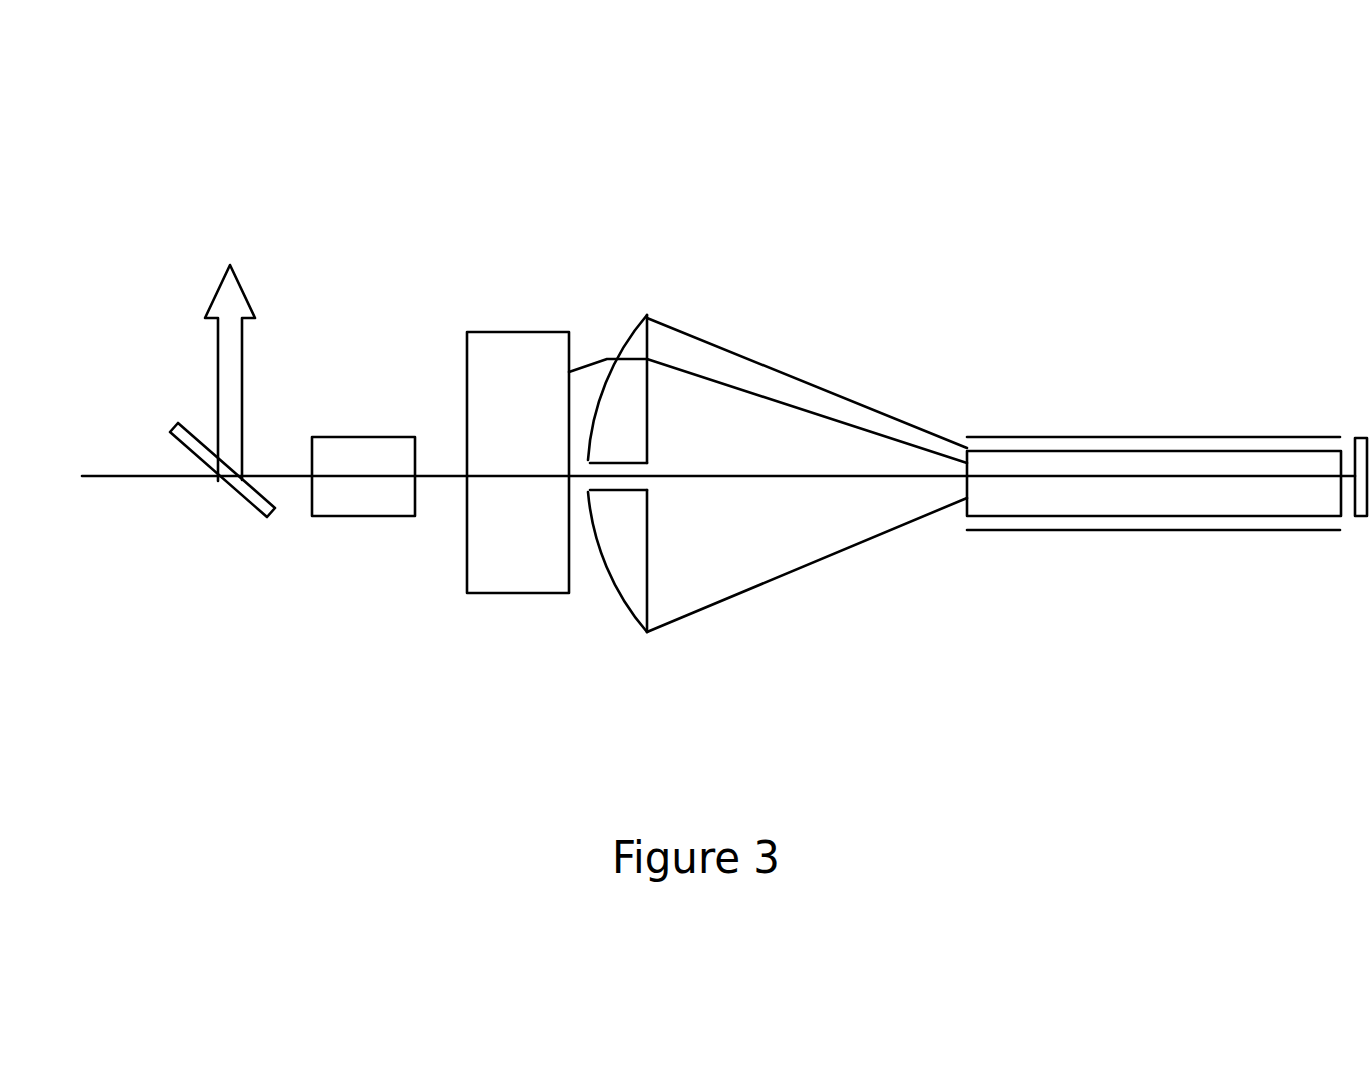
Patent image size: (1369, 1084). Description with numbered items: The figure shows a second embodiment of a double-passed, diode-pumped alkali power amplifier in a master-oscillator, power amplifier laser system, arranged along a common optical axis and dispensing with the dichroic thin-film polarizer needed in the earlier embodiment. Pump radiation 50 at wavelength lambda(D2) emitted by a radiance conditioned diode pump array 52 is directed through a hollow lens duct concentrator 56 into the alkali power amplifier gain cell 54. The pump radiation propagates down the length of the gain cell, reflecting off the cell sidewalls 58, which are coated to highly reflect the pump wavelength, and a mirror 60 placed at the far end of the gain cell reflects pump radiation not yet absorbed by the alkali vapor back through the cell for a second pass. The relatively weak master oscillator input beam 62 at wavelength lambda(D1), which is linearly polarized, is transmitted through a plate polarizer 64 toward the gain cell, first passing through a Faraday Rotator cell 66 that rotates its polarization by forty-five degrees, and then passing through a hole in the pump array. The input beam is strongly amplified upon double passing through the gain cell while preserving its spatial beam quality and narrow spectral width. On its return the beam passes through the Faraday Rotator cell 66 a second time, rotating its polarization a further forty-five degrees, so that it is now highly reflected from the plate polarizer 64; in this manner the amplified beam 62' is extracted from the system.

The radiation 50 is at (770, 397).
The diode pump array 52 is at (525, 332).
The alkali power amplifier gain cell 54 is at (1128, 451).
The hollow lens duct concentrator 56 is at (692, 332).
The cell sidewalls 58 is at (1005, 428).
The mirror 60 is at (1360, 518).
The master oscillator input beam 62 is at (701, 571).
The amplified beam 62' is at (163, 295).
The plate polarizer 64 is at (248, 500).
The Faraday Rotator cell 66 is at (330, 516).